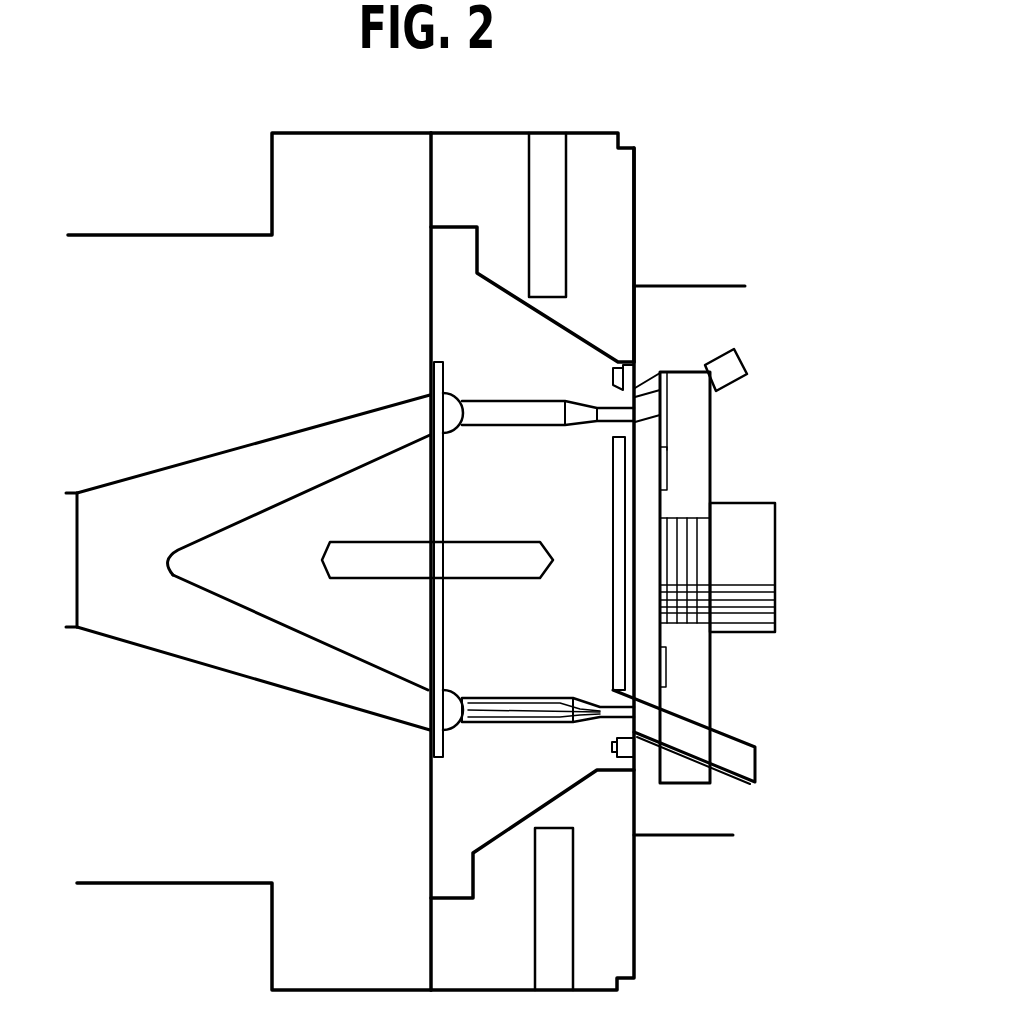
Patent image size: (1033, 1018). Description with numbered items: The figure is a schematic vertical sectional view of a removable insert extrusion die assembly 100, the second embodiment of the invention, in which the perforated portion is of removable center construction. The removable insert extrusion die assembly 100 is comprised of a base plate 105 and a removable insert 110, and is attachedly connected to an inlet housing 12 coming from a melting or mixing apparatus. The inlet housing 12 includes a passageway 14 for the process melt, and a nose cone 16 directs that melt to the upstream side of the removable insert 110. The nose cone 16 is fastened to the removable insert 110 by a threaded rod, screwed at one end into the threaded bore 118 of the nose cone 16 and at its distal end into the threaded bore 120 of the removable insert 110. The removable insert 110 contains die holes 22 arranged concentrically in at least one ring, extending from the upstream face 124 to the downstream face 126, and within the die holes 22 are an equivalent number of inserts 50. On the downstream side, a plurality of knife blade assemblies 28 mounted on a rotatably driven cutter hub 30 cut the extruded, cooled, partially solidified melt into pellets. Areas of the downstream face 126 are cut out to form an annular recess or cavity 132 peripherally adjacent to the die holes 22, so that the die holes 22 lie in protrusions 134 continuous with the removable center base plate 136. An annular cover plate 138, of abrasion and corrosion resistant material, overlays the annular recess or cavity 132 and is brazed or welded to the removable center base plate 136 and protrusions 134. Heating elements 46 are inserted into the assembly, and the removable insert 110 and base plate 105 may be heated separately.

The inlet housing 12 is at (188, 848).
The passageway 14 is at (137, 512).
The nose cone 16 is at (223, 568).
The die holes 22 is at (520, 405).
The knife blade assemblies 28 is at (730, 748).
The cutter hub 30 is at (705, 437).
The heating elements 46 is at (542, 255).
The inserts 50 is at (495, 715).
The removable insert extrusion die assembly 100 is at (642, 188).
The base plate 105 is at (590, 237).
The removable insert 110 is at (453, 293).
The threaded bore 118 is at (362, 557).
The threaded bore 120 is at (458, 557).
The upstream face 124 is at (430, 730).
The downstream face 126 is at (645, 380).
The annular recess or cavity 132 is at (615, 360).
The protrusions 134 is at (622, 424).
The removable center base plate 136 is at (458, 845).
The annular cover plate 138 is at (623, 497).